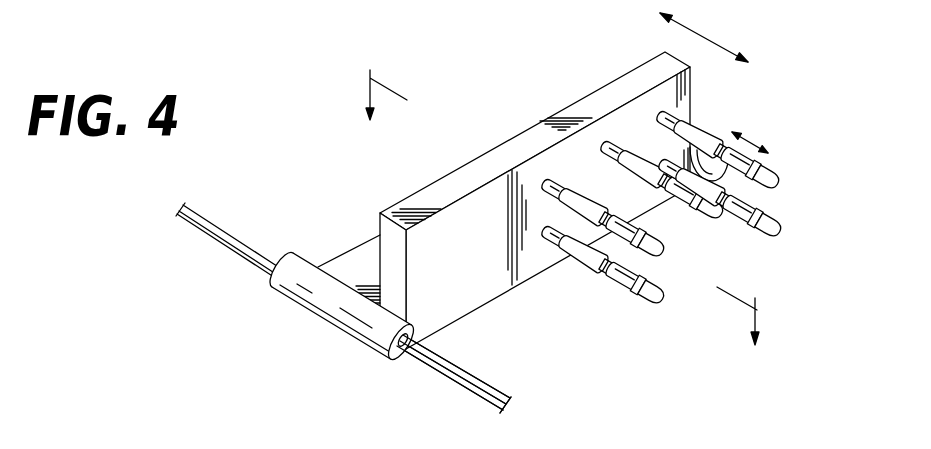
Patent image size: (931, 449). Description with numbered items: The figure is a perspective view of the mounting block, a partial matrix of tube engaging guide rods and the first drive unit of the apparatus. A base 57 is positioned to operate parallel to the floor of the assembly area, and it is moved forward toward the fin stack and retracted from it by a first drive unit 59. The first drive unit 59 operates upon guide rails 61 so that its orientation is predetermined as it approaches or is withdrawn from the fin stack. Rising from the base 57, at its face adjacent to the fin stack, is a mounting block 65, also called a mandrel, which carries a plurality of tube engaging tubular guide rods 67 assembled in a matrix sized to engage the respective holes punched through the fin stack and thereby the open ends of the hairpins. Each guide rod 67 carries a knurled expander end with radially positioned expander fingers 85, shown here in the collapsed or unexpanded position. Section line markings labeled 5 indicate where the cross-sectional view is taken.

The section line 5- 5 is at (562, 223).
The base 57 is at (362, 247).
The first drive unit 59 is at (320, 315).
The guide rails 61 is at (207, 228).
The mounting block 65 is at (494, 241).
The tube engaging tubular guide rods 67 is at (703, 120).
The expander fingers 85 is at (777, 165).